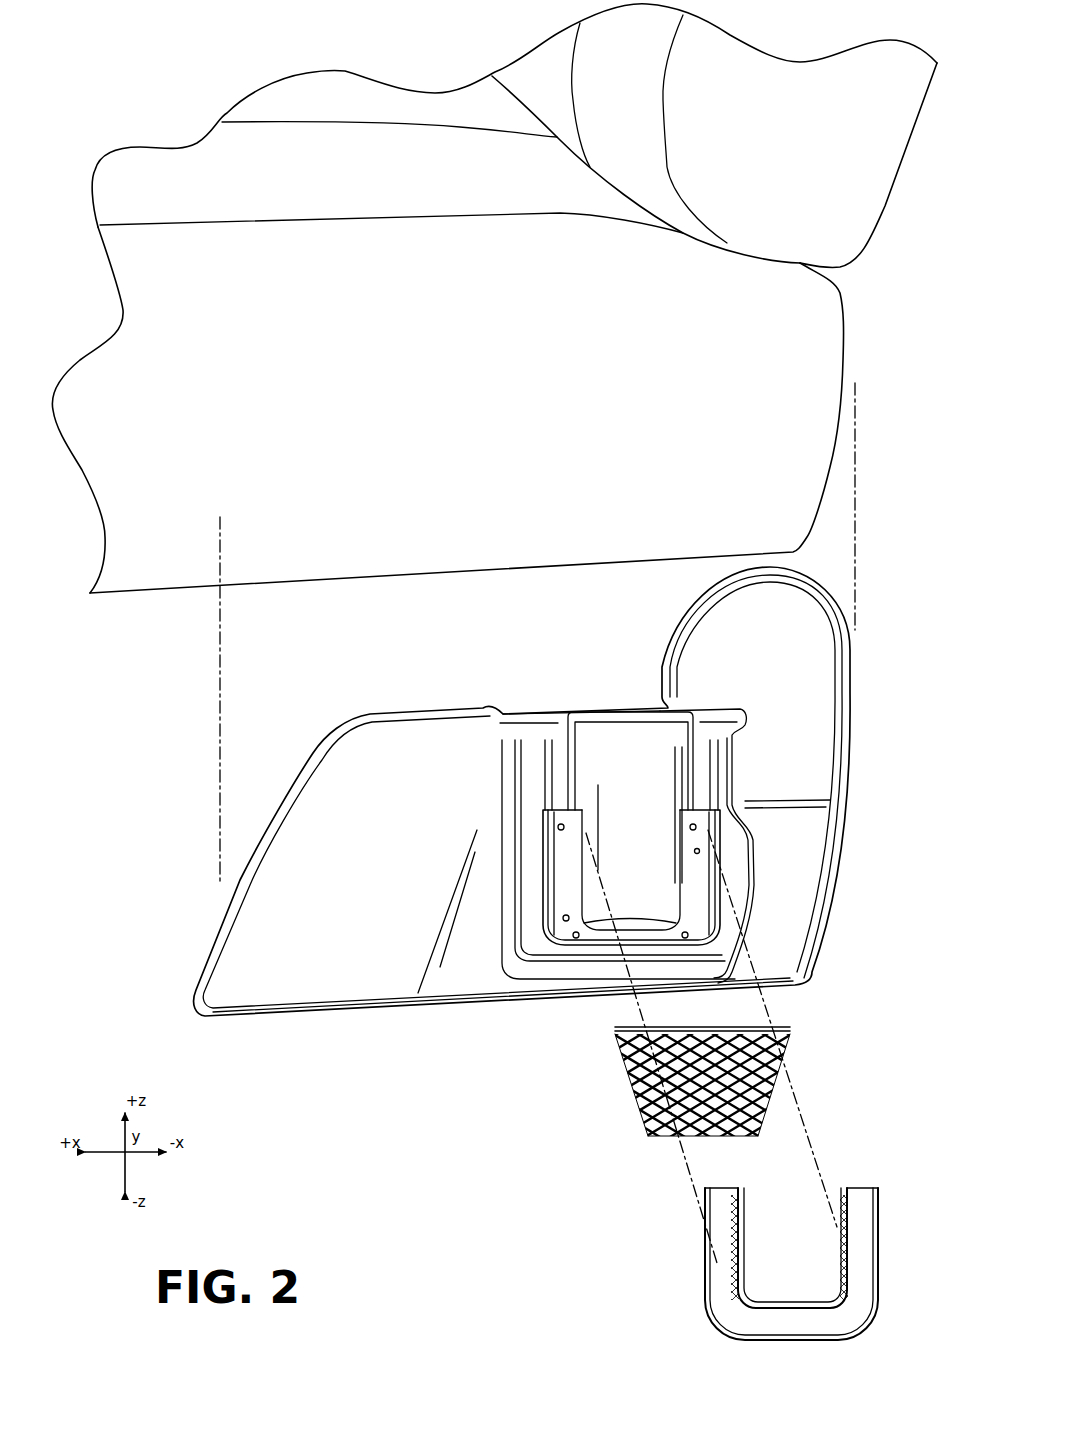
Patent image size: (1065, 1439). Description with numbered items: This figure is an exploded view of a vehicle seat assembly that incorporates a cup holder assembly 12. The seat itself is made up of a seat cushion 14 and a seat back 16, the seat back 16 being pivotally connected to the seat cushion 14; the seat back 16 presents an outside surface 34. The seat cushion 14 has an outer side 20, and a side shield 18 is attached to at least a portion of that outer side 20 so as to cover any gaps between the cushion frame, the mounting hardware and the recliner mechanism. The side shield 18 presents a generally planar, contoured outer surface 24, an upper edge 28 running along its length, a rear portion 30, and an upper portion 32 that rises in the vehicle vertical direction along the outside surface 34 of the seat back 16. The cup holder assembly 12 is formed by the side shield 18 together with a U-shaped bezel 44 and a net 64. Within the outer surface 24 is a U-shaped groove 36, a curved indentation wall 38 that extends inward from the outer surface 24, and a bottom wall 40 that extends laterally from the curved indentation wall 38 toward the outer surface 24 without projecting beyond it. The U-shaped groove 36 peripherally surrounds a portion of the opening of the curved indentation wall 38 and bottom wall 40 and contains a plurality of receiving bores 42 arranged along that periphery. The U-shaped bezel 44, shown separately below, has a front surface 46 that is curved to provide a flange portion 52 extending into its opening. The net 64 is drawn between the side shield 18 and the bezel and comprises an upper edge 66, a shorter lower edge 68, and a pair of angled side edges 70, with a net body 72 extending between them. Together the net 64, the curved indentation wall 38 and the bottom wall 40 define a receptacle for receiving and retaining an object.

The cup holder assembly 12 is at (617, 1253).
The seat cushion 14 is at (112, 207).
The seat back 16 is at (858, 204).
The side shield 18 is at (297, 990).
The outer side 20 is at (501, 349).
The outer surface 24 is at (346, 909).
The upper edge 28 is at (463, 717).
The rear portion 30 is at (817, 886).
The upper portion 32 is at (814, 656).
The outside surface 34 is at (763, 166).
The U-shaped groove 36 is at (557, 898).
The curved indentation wall 38 is at (618, 722).
The bottom wall 40 is at (600, 925).
The receiving bores 42 is at (556, 827).
The U-shaped bezel 44 is at (831, 1240).
The front surface 46 is at (862, 1240).
The flange portion 52 is at (846, 1190).
The net 64 is at (726, 1080).
The upper edge 66 is at (787, 1023).
The lower edge 68 is at (743, 1135).
The side edges 70 is at (628, 1075).
The net body 72 is at (699, 1075).